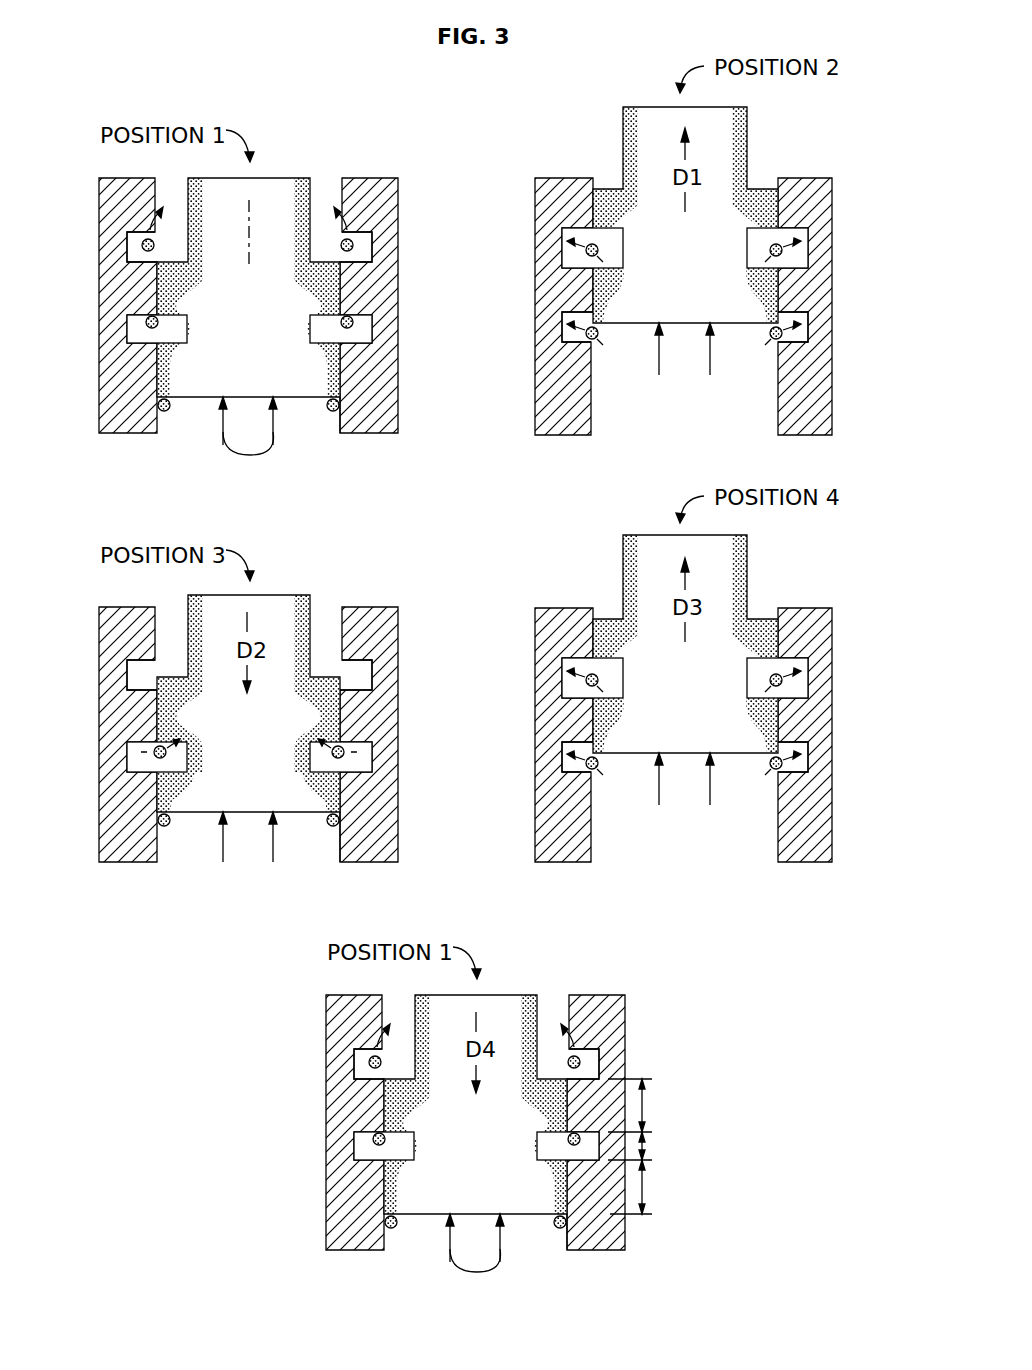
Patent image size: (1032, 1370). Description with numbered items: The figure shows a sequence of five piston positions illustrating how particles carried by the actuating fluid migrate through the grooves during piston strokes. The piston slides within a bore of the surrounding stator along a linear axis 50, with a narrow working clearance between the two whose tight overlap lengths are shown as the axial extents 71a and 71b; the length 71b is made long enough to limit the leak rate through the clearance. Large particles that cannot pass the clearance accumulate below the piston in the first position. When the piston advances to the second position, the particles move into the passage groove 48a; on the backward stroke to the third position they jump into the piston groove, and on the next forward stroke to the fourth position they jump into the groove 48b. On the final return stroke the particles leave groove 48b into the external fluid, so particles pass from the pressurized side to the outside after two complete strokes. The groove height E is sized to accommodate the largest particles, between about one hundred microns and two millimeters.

The groove 48a is at (127, 328).
The groove 48b is at (127, 248).
The linear axis 50 is at (249, 228).
The axial extent 71a is at (662, 1105).
The axial extent 71b is at (663, 1187).
The groove height E is at (648, 1143).